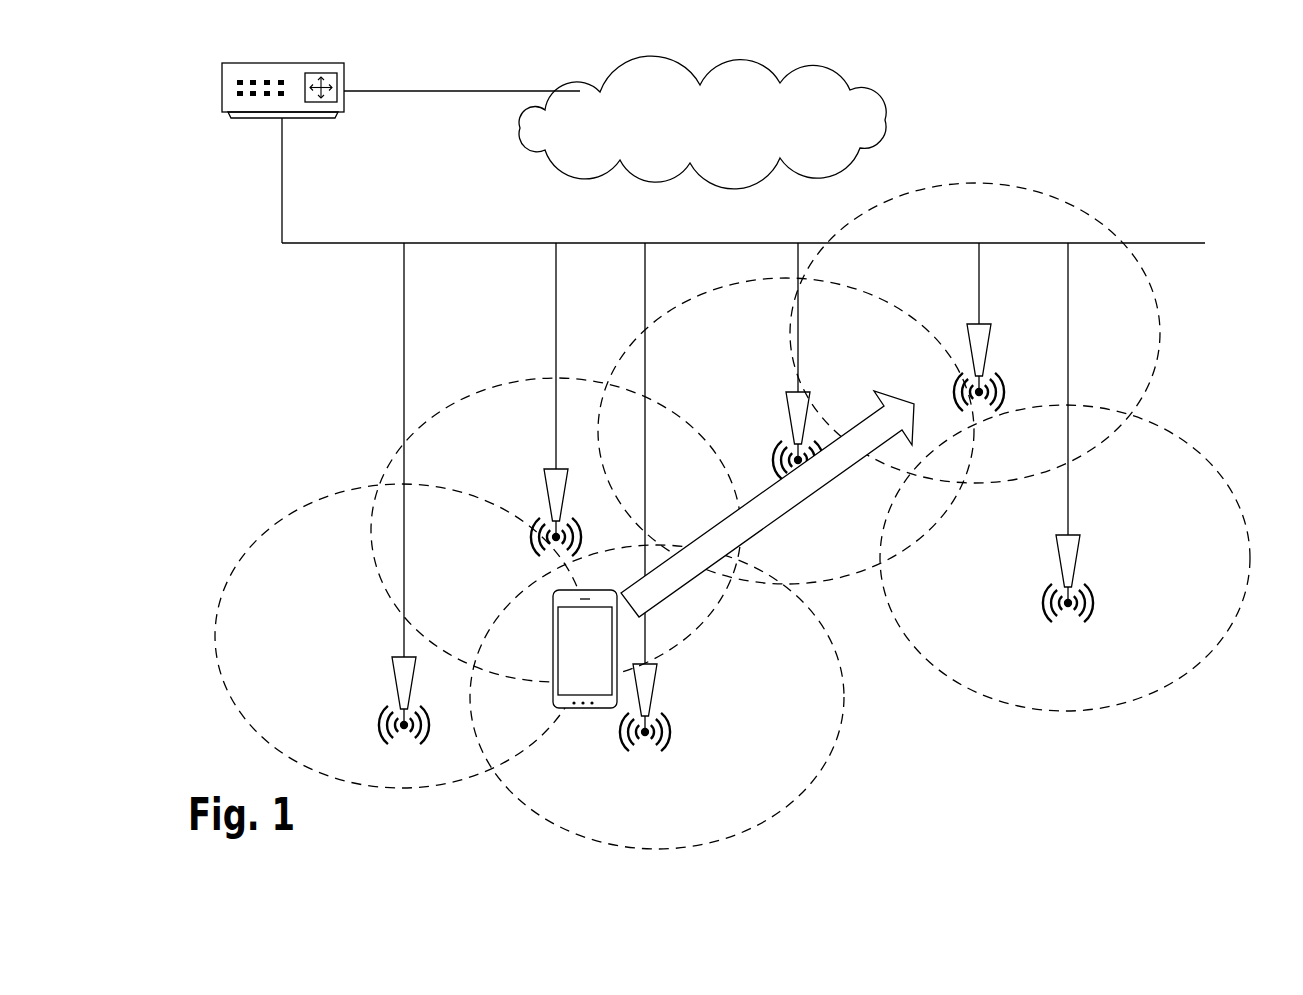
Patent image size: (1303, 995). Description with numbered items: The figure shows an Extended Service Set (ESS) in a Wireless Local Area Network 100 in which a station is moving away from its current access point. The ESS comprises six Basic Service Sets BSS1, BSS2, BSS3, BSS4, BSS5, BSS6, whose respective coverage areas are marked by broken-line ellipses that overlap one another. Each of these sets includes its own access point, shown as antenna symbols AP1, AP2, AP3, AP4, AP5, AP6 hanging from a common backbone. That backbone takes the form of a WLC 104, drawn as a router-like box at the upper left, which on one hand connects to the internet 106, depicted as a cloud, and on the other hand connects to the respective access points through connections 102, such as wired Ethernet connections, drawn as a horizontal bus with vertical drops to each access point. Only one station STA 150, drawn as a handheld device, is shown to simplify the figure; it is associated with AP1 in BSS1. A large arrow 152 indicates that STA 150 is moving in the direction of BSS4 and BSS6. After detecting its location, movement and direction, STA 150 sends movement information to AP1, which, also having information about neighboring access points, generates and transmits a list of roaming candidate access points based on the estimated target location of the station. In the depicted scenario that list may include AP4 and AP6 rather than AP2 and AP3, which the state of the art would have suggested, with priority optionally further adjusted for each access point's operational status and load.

The Wireless Local Area Network 100 is at (732, 452).
The connections 102 is at (404, 302).
The WLC 104 is at (343, 115).
The internet 106 is at (878, 100).
The STA 150 is at (553, 633).
The arrow 152 is at (772, 503).
The access point AP1 is at (633, 692).
The access point AP2 is at (392, 675).
The access point AP3 is at (543, 488).
The access point AP4 is at (787, 417).
The access point AP5 is at (1082, 558).
The access point AP6 is at (967, 343).
The Basic Service Set BSS1 is at (812, 772).
The Basic Service Set BSS2 is at (285, 515).
The Basic Service Set BSS3 is at (505, 383).
The Basic Service Set BSS4 is at (845, 577).
The Basic Service Set BSS5 is at (1130, 705).
The Basic Service Set BSS6 is at (1157, 298).